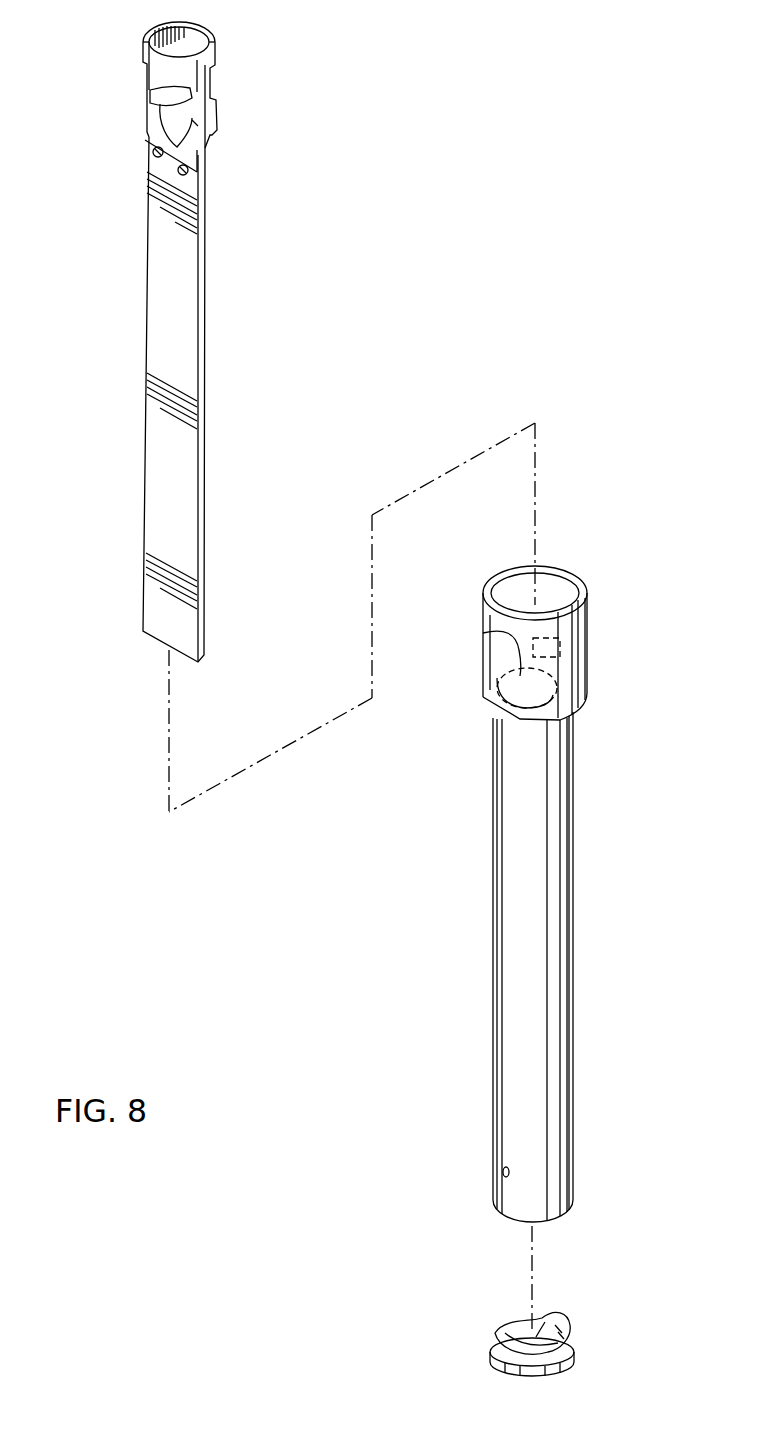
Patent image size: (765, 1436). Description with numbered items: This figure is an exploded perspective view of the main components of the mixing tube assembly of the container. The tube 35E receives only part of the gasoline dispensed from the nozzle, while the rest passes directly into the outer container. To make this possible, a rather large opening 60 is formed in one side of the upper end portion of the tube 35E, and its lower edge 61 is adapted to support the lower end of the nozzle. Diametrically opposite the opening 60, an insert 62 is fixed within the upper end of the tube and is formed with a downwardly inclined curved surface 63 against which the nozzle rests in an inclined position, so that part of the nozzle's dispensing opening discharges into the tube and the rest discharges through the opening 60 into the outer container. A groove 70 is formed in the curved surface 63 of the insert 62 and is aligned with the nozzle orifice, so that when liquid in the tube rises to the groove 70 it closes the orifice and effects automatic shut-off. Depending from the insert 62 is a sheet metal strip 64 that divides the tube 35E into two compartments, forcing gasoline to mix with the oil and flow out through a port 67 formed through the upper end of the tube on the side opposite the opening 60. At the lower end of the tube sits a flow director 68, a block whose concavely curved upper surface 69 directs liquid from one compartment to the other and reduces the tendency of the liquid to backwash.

The groove 70 is at (156, 83).
The downwardly inclined curved surface 63 is at (166, 115).
The insert 62 is at (200, 148).
The sheet metal strip 64 is at (175, 395).
The opening 60 is at (500, 652).
The lower edge 61 is at (492, 706).
The port 67 is at (583, 640).
The tube 35E is at (536, 925).
The flow director 68 is at (510, 1357).
The concavely curved upper surface 69 is at (551, 1313).